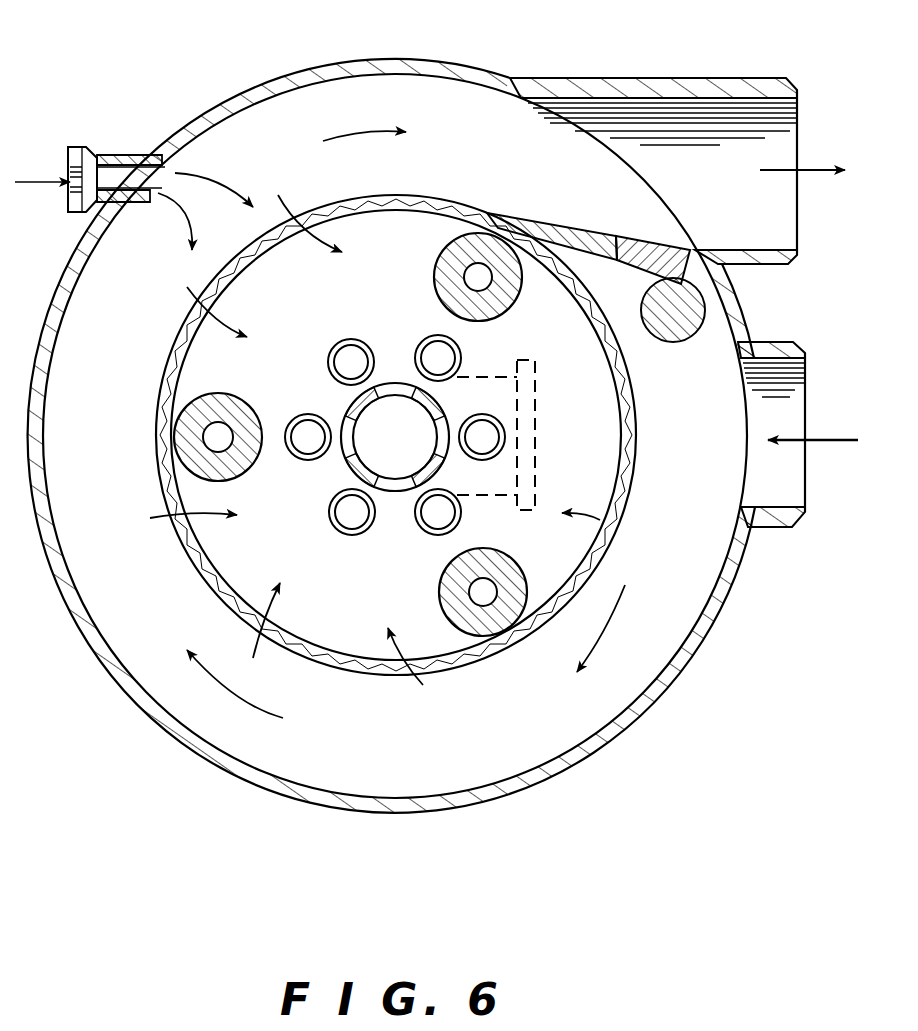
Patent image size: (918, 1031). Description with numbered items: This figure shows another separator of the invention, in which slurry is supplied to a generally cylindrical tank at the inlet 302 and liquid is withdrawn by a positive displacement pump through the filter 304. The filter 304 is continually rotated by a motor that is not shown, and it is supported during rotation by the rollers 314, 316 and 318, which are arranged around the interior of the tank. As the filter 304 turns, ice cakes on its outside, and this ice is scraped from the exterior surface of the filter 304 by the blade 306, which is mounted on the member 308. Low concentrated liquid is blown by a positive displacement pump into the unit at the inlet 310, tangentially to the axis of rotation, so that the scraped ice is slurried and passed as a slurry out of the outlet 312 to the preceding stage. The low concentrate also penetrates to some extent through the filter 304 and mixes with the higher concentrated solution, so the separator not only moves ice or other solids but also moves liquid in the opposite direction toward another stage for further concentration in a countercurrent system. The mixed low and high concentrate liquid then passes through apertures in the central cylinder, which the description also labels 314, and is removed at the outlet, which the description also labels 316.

The inlet 302 is at (790, 512).
The filter 304 is at (372, 680).
The blade 306 is at (574, 222).
The member 308 is at (666, 341).
The inlet 310 is at (124, 158).
The outlet 312 is at (743, 108).
The roller 314 is at (240, 398).
The roller 316 is at (453, 280).
The roller 318 is at (455, 596).